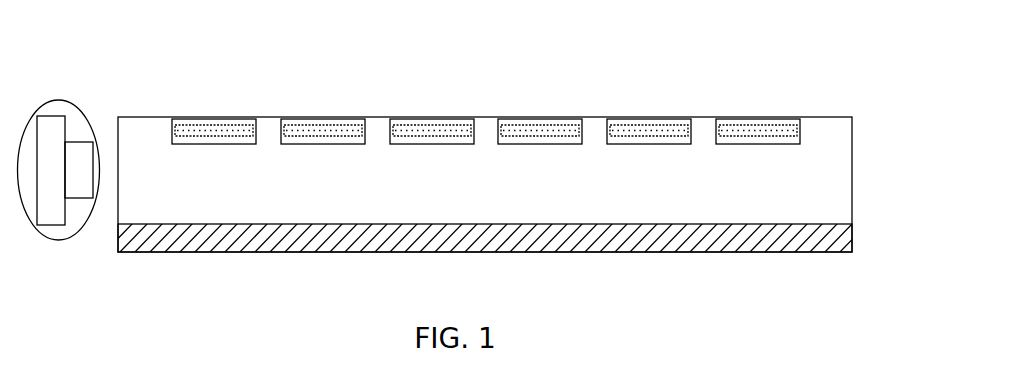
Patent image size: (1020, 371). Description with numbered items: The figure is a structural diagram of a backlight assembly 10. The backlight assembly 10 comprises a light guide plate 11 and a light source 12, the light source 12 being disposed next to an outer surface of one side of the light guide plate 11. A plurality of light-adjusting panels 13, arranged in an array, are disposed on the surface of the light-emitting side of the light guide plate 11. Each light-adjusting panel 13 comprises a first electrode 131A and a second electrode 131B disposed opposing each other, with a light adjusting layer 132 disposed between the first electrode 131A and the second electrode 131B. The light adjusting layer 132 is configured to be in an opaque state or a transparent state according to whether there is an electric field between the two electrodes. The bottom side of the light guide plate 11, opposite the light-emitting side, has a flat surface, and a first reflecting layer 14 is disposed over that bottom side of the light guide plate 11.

The backlight assembly 10 is at (175, 24).
The light guide plate 11 is at (827, 171).
The light source 12 is at (87, 117).
The light-adjusting panel 13 is at (486, 77).
The first electrode 131A is at (628, 123).
The second electrode 131B is at (644, 140).
The light adjusting layer 132 is at (665, 92).
The first reflecting layer 14 is at (827, 237).